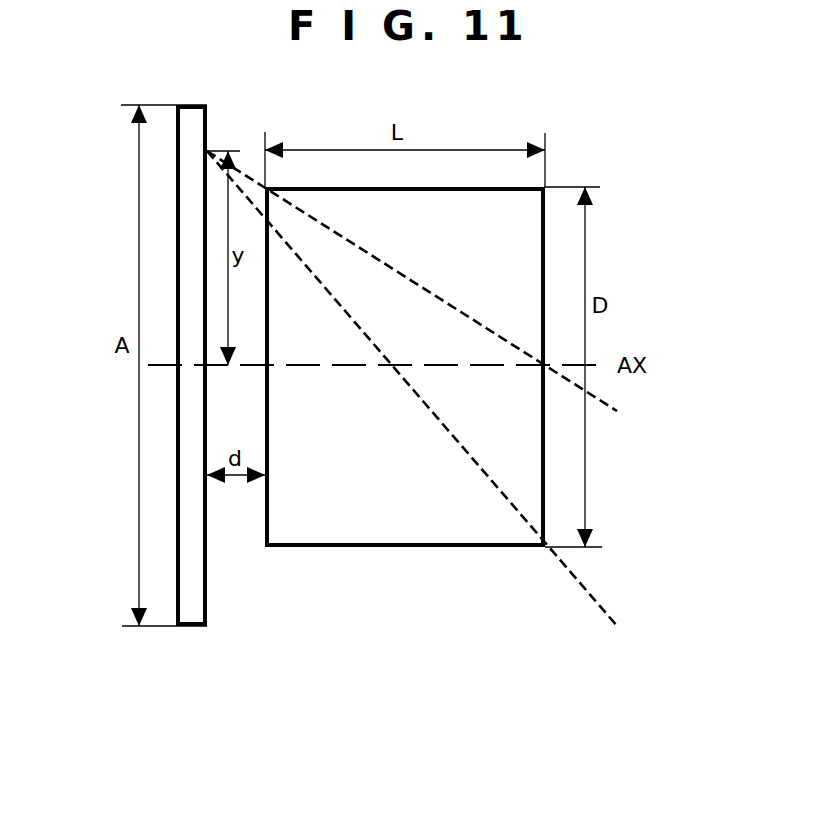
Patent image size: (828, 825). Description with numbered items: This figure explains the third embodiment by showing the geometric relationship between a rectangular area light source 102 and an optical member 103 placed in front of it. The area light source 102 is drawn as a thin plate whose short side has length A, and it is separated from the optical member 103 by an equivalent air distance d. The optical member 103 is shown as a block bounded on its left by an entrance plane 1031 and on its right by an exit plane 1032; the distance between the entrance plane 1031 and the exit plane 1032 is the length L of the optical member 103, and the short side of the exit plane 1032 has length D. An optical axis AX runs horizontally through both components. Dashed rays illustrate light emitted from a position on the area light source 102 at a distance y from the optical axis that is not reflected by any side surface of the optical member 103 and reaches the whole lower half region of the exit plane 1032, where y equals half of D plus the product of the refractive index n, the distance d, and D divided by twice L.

The area light source 102 is at (190, 615).
The optical member 103 is at (378, 523).
The entrance plane 1031 is at (263, 523).
The exit plane 1032 is at (543, 505).